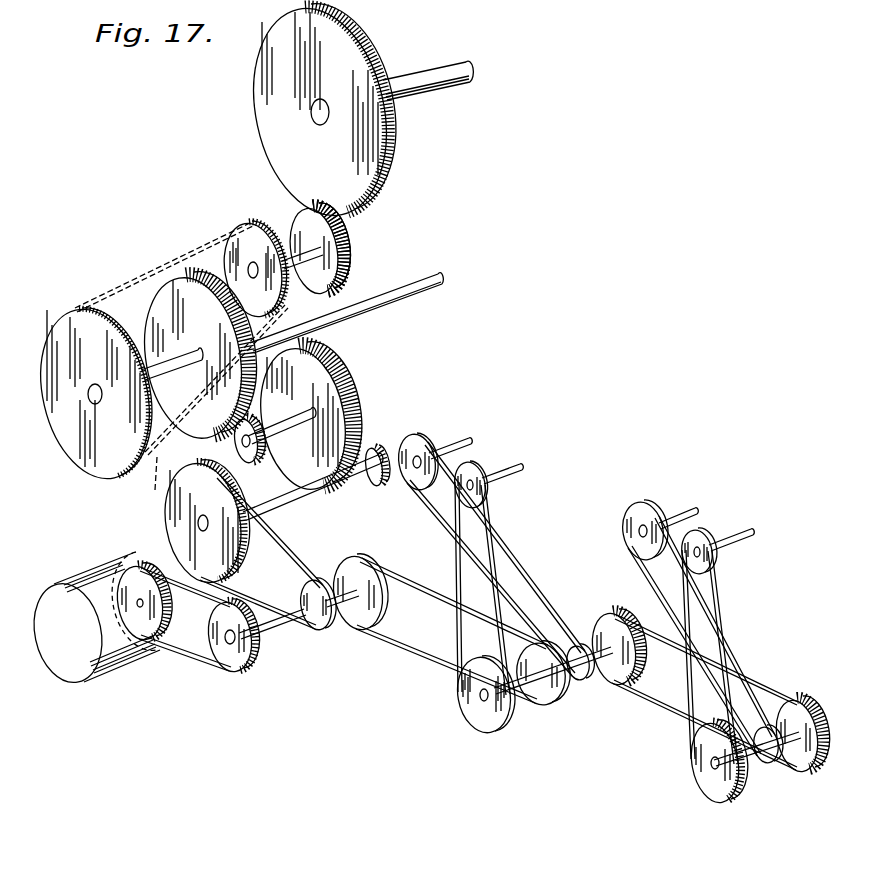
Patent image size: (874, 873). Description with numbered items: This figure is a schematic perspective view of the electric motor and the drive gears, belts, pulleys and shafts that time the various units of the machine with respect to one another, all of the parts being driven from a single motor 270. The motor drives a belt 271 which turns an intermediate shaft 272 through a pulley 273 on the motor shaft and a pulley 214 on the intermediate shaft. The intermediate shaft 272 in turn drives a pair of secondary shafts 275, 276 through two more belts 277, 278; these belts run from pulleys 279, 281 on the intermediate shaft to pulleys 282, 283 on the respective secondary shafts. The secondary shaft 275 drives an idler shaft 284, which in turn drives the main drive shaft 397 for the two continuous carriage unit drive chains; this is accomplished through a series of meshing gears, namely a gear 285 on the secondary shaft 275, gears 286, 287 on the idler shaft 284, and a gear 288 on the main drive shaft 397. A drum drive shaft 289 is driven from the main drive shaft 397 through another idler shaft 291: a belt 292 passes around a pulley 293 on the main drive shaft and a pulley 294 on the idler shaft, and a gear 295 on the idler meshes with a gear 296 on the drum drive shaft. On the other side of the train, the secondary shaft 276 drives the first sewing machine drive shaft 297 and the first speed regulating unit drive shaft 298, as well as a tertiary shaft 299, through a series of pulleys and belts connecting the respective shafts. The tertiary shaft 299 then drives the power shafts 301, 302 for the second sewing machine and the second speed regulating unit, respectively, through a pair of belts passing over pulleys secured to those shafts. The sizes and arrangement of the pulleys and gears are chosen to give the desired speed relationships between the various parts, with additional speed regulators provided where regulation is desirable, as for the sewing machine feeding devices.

The gear 296 is at (360, 26).
The drum drive shaft 289 is at (437, 60).
The idler shaft 291 is at (318, 214).
The gear 295 is at (353, 245).
The pulley 294 is at (251, 230).
The belt 292 is at (152, 270).
The pulley 293 is at (63, 310).
The gear 288 is at (162, 297).
The main drive shaft 397 is at (426, 278).
The gear 286 is at (350, 380).
The idler shaft 284 is at (307, 405).
The gear 285 is at (373, 447).
The gear 287 is at (245, 458).
The pulley 282 is at (168, 492).
The secondary shaft 275 is at (297, 500).
The pulley 273 is at (132, 568).
The belt 277 is at (297, 551).
The pulley 281 is at (358, 566).
The motor 270 is at (103, 672).
The belt 271 is at (184, 653).
The pulley 214 is at (232, 666).
The intermediate shaft 272 is at (284, 634).
The pulley 279 is at (323, 632).
The belt 278 is at (427, 570).
The first speed regulating unit drive shaft 298 is at (460, 443).
The first sewing machine drive shaft 297 is at (513, 466).
The secondary shaft 276 is at (572, 680).
The pulley 283 is at (548, 703).
The power shaft 302 is at (687, 508).
The power shaft 301 is at (737, 534).
The tertiary shaft 299 is at (745, 777).